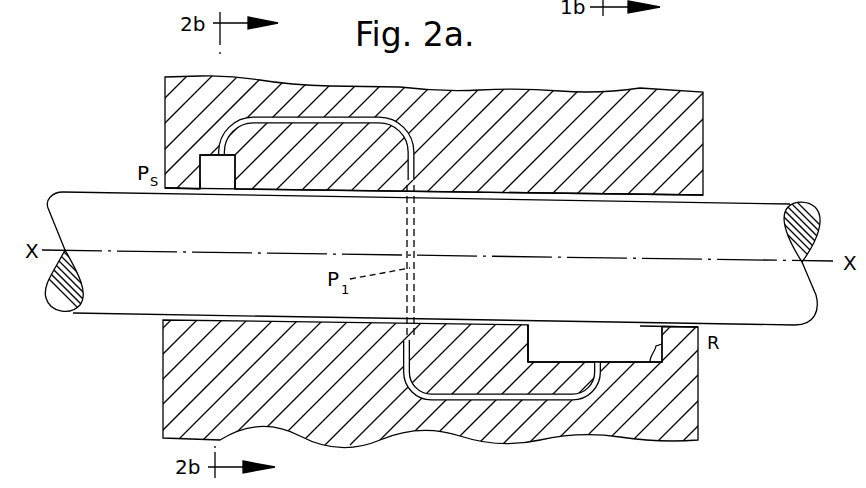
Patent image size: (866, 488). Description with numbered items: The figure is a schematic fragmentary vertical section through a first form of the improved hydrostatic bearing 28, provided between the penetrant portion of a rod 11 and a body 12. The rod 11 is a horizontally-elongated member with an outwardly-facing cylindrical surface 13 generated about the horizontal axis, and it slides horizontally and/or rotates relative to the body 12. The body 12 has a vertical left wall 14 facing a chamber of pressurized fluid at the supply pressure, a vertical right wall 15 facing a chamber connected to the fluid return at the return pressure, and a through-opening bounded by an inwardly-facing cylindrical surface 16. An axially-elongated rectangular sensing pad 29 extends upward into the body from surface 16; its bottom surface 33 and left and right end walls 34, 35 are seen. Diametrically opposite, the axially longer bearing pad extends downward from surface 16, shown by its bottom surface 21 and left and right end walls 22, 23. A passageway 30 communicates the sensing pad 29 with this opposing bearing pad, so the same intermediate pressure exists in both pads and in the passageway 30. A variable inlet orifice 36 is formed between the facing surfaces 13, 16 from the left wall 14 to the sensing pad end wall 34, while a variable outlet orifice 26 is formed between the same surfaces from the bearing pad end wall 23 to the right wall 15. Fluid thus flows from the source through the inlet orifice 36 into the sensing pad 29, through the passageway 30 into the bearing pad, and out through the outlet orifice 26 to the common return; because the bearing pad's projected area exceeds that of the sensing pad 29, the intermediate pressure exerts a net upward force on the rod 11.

The rod 11 is at (778, 190).
The body 12 is at (450, 147).
The outwardly-facing horizontal cylindrical surface 13 is at (507, 193).
The vertical left wall 14 is at (165, 111).
The vertical right wall 15 is at (700, 402).
The inwardly-facing cylindrical surface 16 is at (549, 197).
The bottom surface 21 is at (575, 353).
The left end wall 22 is at (530, 342).
The right end wall 23 is at (648, 360).
The outlet orifice 26 is at (682, 308).
The improved hydrostatic bearing 28 is at (803, 119).
The sensing pad 29 is at (229, 181).
The passageway 30 is at (403, 348).
The bottom surface 33 is at (250, 161).
The left end wall 34 is at (200, 192).
The right end wall 35 is at (232, 193).
The variable inlet orifice 36 is at (165, 205).